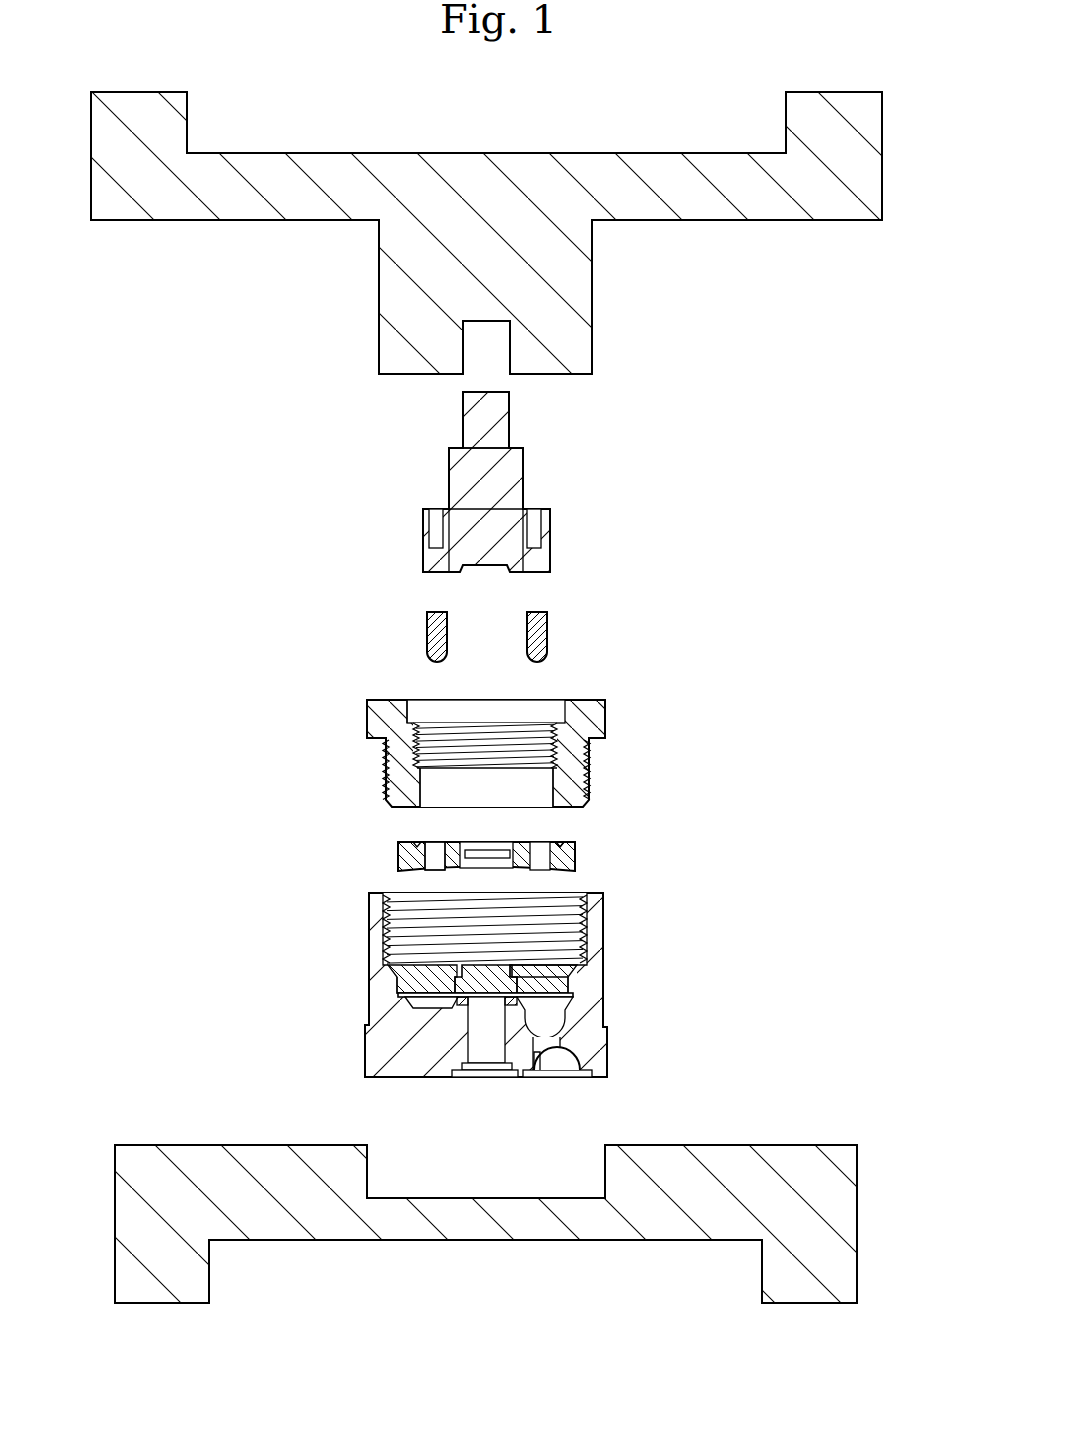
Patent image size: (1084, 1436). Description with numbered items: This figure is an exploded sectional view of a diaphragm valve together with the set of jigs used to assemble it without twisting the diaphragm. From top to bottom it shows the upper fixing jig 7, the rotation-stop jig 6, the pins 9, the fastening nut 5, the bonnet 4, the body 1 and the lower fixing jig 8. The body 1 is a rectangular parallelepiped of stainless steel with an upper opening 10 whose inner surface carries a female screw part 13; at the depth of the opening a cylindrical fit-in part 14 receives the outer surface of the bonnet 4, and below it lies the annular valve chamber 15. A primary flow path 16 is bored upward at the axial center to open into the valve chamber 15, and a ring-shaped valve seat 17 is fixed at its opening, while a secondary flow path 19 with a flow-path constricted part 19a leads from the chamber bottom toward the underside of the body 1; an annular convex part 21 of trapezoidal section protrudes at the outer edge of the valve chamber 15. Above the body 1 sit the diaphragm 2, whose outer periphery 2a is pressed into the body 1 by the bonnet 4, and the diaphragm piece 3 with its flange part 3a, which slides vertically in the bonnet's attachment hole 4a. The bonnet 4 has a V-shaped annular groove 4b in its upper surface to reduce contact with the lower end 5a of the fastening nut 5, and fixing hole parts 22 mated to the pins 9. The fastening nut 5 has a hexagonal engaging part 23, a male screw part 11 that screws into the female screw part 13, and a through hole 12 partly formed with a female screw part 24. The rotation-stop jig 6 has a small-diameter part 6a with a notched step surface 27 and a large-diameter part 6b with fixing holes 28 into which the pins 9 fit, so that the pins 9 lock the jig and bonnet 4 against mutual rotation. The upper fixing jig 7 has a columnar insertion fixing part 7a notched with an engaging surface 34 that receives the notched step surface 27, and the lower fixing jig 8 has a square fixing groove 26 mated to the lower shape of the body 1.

The body 1 is at (607, 1035).
The diaphragm 2 is at (533, 987).
The outer periphery 2a is at (575, 993).
The diaphragm piece 3 is at (484, 970).
The flange part 3a is at (455, 980).
The bonnet 4 is at (398, 861).
The attachment hole 4a is at (466, 853).
The annular groove 4b is at (562, 843).
The fastening nut 5 is at (607, 717).
The lower end 5a is at (405, 812).
The rotation-stop jig 6 is at (552, 530).
The small-diameter part 6a is at (467, 463).
The large-diameter part 6b is at (455, 522).
The fixing jig 7 is at (793, 204).
The insertion fixing part 7a is at (560, 290).
The fixing jig 8 is at (837, 1193).
The pin 9 is at (433, 618).
The upper opening 10 is at (567, 903).
The male screw part 11 is at (590, 772).
The through hole 12 is at (553, 778).
The female screw part 13 is at (553, 970).
The fit-in part 14 is at (560, 980).
The valve chamber 15 is at (393, 1013).
The primary flow path 16 is at (500, 1037).
The valve seat 17 is at (462, 1008).
The secondary flow path 19 is at (570, 1057).
The flow-path constricted part 19a is at (547, 1052).
The annular convex part 21 is at (403, 985).
The fixing hole part 22 is at (435, 850).
The engaging part 23 is at (367, 715).
The female screw part 24 is at (547, 727).
The fixing groove 26 is at (603, 1165).
The notched step surface 27 is at (463, 432).
The fixing hole 28 is at (432, 560).
The engaging surface 34 is at (505, 328).